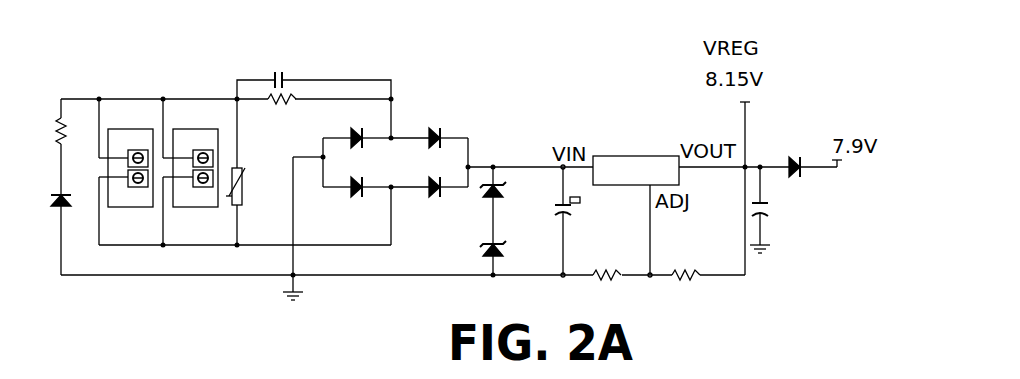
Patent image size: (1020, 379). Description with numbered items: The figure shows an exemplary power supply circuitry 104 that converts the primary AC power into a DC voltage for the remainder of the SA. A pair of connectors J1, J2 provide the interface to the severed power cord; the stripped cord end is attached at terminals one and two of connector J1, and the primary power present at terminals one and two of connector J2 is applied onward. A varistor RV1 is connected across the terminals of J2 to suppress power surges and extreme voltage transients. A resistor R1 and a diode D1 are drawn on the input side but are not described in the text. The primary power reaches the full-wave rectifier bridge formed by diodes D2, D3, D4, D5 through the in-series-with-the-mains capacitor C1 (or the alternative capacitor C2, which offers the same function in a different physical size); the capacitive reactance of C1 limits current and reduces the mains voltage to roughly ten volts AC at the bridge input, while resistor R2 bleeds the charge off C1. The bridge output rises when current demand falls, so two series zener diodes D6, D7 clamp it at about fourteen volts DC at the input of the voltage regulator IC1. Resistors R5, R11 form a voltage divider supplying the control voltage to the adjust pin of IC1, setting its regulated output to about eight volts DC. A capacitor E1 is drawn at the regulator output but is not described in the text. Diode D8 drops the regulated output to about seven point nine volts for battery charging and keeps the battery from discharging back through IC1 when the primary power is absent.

The power supply circuitry 104 is at (77, 33).
The resistor R1 is at (47, 146).
The diode D1 is at (50, 235).
The connector J1 is at (130, 158).
The connector J2 is at (195, 158).
The varistor RV1 is at (256, 186).
The capacitor C1 is at (314, 71).
The resistor R2 is at (281, 113).
The diode D4 is at (357, 128).
The diode D5 is at (429, 137).
The diode D3 is at (357, 179).
The diode D2 is at (429, 194).
The zener diode D6 is at (508, 192).
The zener diode D7 is at (509, 250).
The capacitor C2 is at (587, 221).
The voltage regulator IC1 is at (636, 157).
The resistor R5 is at (606, 288).
The resistor R11 is at (686, 288).
The electrolytic capacitor 47uF E1 is at (788, 210).
The diode D8 is at (797, 155).